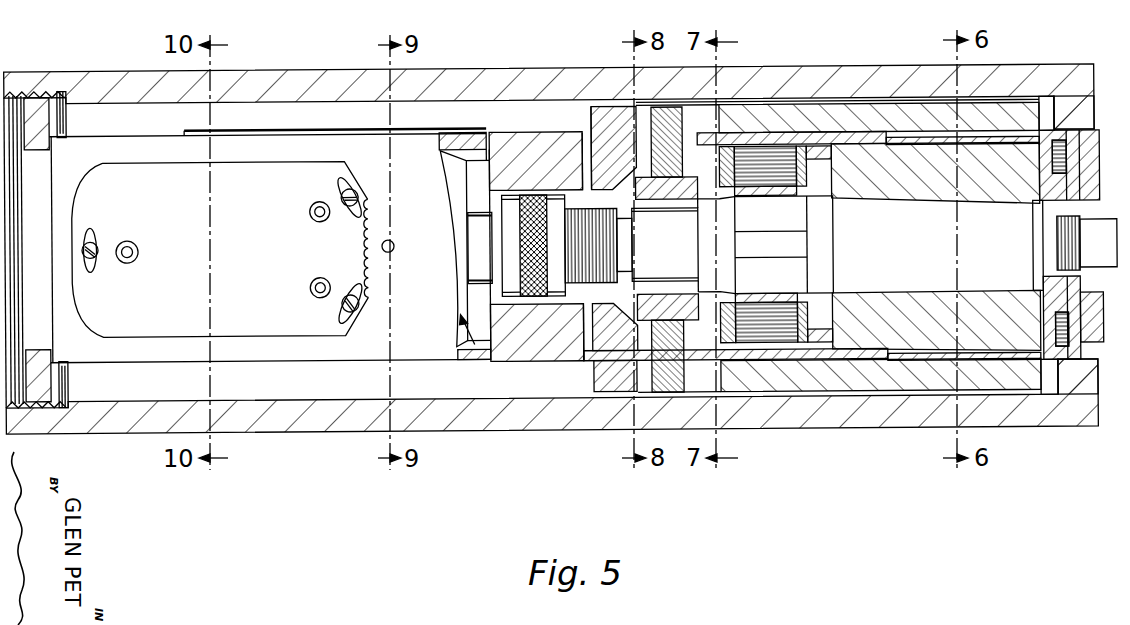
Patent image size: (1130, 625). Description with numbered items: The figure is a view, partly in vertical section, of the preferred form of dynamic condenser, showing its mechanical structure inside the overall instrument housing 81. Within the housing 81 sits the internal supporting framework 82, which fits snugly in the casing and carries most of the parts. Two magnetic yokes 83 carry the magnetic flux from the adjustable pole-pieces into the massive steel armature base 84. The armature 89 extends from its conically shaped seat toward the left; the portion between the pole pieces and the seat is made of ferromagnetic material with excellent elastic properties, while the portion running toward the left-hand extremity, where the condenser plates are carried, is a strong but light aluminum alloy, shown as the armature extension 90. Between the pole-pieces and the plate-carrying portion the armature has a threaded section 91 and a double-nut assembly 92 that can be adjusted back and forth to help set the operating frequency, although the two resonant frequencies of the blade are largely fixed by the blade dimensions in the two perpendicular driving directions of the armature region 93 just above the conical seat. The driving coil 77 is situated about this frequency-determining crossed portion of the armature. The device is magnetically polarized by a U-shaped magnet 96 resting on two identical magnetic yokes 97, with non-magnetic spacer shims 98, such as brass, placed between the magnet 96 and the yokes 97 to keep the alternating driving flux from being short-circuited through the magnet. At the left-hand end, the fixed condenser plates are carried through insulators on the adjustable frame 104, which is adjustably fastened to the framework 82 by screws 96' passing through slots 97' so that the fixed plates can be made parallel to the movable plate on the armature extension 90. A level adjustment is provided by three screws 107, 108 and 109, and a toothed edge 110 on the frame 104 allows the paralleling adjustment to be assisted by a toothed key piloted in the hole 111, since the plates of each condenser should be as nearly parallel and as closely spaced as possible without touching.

The driving coil 77 is at (773, 336).
The instrument housing 81 is at (813, 428).
The internal supporting framework 82 is at (1099, 352).
The magnetic yokes 83 is at (1004, 112).
The armature base 84 is at (942, 345).
The armature 89 is at (1022, 231).
The armature extension 90 is at (462, 357).
The threaded section 91 is at (580, 286).
The double-nut assembly 92 is at (557, 294).
The armature region 93 is at (770, 272).
The U-shaped magnet 96 is at (536, 262).
The screws 96' is at (228, 248).
The magnetic yokes 97 is at (595, 235).
The slots 97' is at (224, 245).
The non-magnetic spacer shims 98 is at (586, 368).
The adjustable frame 104 is at (177, 318).
The screw 107 is at (139, 252).
The screw 108 is at (309, 211).
The screw 109 is at (309, 288).
The toothed edge 110 is at (372, 237).
The hole 111 is at (395, 248).